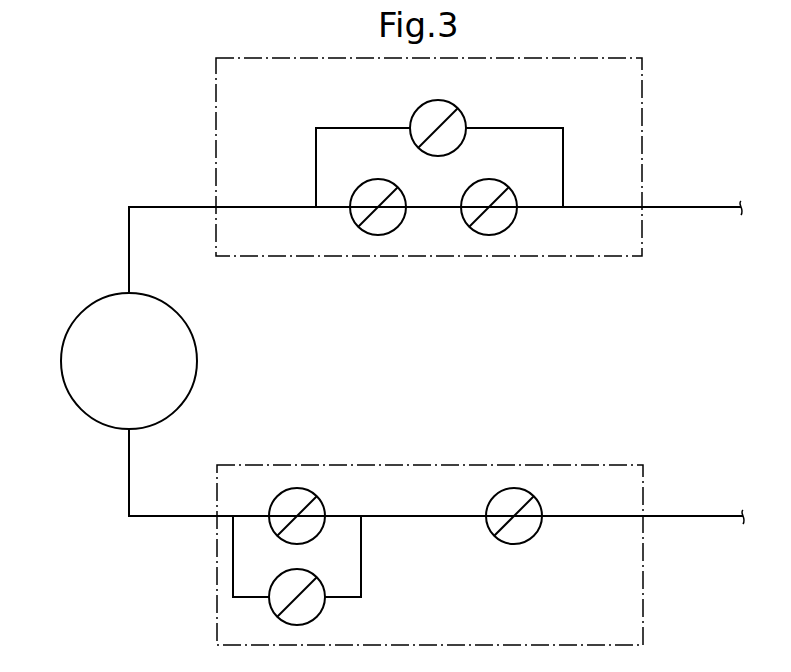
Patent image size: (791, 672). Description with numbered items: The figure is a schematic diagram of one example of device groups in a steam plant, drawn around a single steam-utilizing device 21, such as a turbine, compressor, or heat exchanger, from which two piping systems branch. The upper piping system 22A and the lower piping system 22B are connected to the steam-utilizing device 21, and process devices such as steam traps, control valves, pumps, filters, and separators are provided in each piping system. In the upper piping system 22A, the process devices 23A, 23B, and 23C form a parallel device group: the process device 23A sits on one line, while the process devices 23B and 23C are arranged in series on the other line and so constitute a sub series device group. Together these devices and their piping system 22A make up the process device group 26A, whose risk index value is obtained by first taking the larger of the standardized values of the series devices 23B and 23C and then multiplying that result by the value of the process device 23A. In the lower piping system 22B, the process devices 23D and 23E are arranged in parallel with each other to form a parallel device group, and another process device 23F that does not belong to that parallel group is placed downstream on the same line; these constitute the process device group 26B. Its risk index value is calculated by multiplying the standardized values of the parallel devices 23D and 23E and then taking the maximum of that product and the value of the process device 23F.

The steam-utilizing device 21 is at (83, 413).
The piping system 22A is at (685, 206).
The piping system 22B is at (678, 515).
The process device 23A is at (457, 107).
The process device 23B is at (352, 218).
The process device 23C is at (513, 212).
The process device 23D is at (320, 500).
The process device 23E is at (322, 603).
The process device 23F is at (488, 526).
The process device group 26A is at (641, 102).
The process device group 26B is at (642, 577).